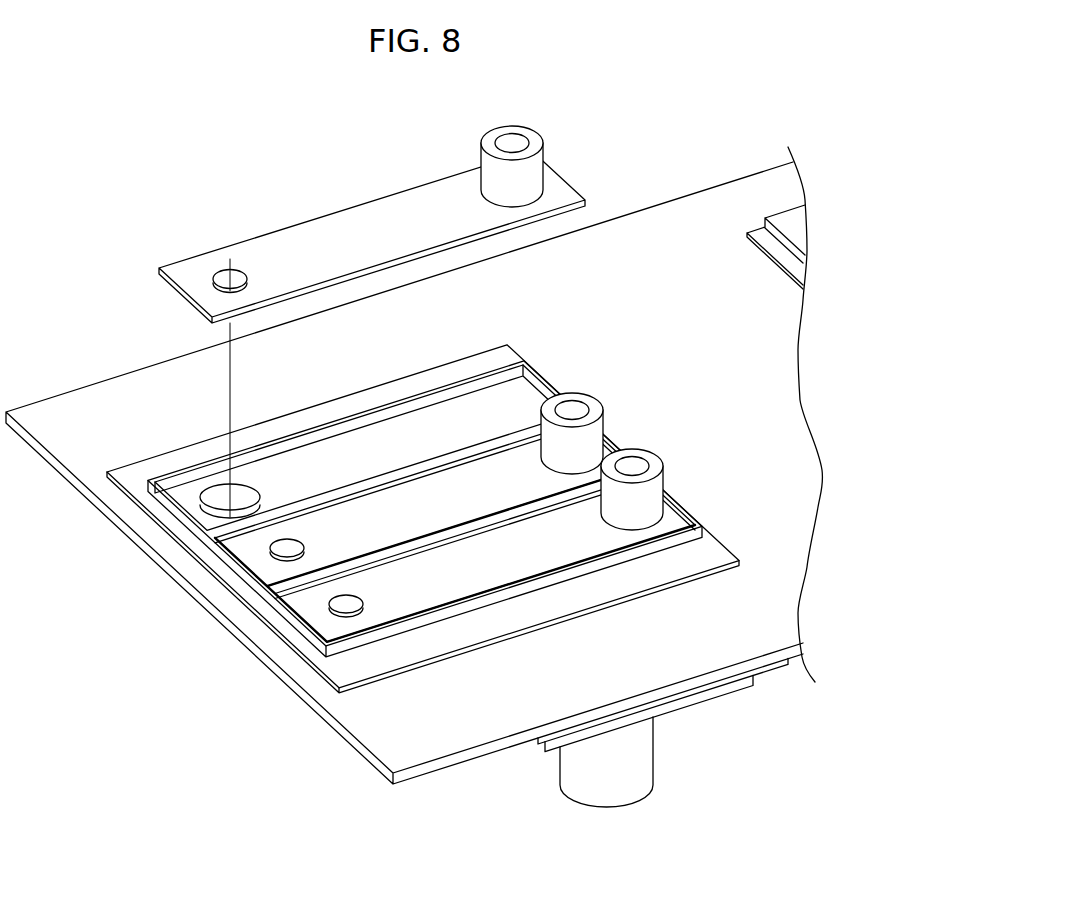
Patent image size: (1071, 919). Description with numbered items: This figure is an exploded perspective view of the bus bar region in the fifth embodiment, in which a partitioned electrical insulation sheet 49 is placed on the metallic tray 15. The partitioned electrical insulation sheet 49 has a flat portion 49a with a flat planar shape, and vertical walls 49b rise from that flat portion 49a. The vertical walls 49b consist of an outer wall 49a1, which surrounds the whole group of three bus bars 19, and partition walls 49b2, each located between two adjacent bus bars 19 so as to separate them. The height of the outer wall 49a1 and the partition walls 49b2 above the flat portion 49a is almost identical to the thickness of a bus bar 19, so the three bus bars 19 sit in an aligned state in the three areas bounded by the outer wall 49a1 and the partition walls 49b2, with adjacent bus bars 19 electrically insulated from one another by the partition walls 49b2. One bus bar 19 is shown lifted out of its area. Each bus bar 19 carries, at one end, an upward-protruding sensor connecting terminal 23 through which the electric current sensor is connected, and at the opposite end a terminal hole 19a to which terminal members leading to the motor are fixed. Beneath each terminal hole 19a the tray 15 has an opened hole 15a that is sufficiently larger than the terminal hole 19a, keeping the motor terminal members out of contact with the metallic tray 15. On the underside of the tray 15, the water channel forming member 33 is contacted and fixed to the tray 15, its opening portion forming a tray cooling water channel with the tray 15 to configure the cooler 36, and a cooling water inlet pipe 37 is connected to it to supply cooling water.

The tray 15 is at (112, 382).
The opened hole 15a is at (215, 512).
The bus bar 19 is at (370, 212).
The terminal hole 19a is at (223, 271).
The sensor connecting terminal 23 is at (515, 127).
The water channel forming member 33 is at (737, 697).
The cooler 36 is at (545, 758).
The cooling water inlet pipe 37 is at (647, 760).
The partitioned electrical insulation sheet 49 is at (358, 678).
The flat portion 49a is at (127, 480).
The outer wall 49a1 is at (442, 617).
The vertical wall 49b is at (177, 513).
The partition wall 49b2 is at (516, 506).